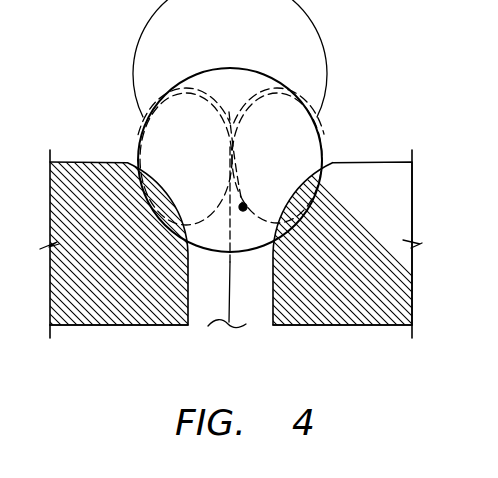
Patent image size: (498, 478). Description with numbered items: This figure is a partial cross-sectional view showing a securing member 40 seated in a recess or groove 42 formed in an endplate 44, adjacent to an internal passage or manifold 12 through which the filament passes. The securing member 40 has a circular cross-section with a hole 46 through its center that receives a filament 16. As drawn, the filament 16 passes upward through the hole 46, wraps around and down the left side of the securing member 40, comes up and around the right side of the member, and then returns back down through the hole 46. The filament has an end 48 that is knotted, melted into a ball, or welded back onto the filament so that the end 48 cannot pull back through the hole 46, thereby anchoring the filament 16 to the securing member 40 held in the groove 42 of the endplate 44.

The securing member 40 is at (233, 179).
The recess or groove 42 is at (338, 156).
The endplate 44 is at (88, 160).
The internal passages or manifolds 12 is at (274, 313).
The hole 46 is at (225, 108).
The end 48 is at (245, 205).
The filament 16 is at (135, 143).